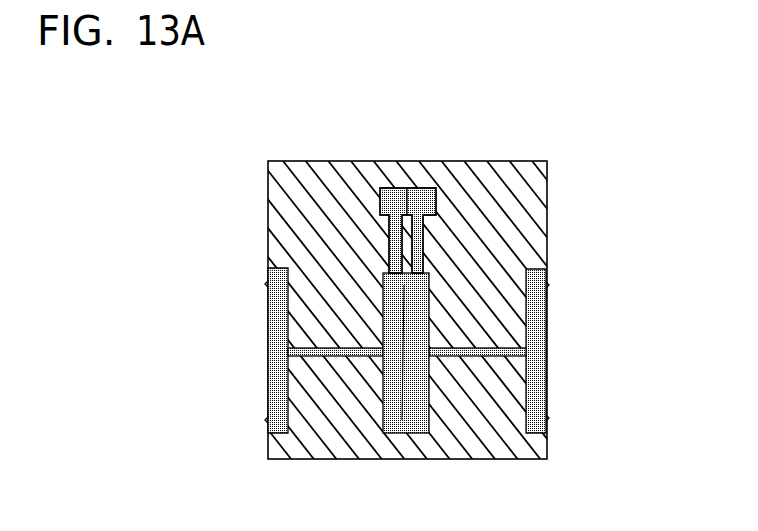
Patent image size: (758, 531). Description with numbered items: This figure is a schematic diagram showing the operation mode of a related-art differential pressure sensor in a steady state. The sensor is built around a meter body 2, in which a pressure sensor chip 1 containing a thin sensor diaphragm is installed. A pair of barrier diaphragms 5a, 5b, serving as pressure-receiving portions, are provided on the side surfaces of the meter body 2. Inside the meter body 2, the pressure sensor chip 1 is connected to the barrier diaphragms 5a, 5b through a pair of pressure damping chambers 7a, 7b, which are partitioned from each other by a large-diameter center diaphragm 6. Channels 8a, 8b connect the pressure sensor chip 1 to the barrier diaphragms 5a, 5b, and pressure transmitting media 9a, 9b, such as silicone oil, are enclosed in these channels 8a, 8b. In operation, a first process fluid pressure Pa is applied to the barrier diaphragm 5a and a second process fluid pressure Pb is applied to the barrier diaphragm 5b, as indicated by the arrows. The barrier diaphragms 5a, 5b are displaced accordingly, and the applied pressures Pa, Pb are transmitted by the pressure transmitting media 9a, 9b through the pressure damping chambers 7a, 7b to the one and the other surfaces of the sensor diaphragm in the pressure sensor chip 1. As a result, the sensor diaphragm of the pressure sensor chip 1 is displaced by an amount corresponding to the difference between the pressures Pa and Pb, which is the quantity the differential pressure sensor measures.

The pressure sensor chip 1 is at (423, 188).
The meter body 2 is at (268, 183).
The barrier diaphragm 5a is at (268, 307).
The barrier diaphragm 5b is at (547, 383).
The center diaphragm 6 is at (403, 412).
The pressure damping chamber 7a is at (385, 282).
The pressure damping chamber 7b is at (414, 293).
The channel 8a is at (331, 356).
The channel 8b is at (483, 357).
The pressure transmitting medium 9a is at (275, 372).
The pressure transmitting medium 9b is at (534, 317).
The first process fluid pressure Pa is at (249, 357).
The second process fluid pressure Pb is at (568, 357).